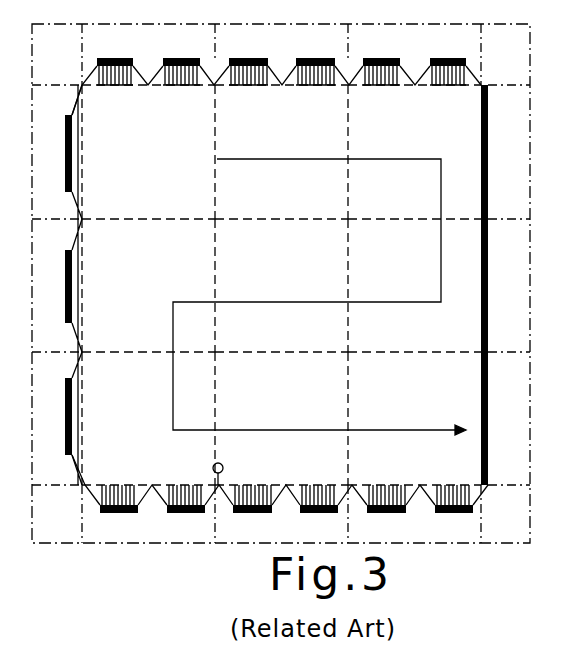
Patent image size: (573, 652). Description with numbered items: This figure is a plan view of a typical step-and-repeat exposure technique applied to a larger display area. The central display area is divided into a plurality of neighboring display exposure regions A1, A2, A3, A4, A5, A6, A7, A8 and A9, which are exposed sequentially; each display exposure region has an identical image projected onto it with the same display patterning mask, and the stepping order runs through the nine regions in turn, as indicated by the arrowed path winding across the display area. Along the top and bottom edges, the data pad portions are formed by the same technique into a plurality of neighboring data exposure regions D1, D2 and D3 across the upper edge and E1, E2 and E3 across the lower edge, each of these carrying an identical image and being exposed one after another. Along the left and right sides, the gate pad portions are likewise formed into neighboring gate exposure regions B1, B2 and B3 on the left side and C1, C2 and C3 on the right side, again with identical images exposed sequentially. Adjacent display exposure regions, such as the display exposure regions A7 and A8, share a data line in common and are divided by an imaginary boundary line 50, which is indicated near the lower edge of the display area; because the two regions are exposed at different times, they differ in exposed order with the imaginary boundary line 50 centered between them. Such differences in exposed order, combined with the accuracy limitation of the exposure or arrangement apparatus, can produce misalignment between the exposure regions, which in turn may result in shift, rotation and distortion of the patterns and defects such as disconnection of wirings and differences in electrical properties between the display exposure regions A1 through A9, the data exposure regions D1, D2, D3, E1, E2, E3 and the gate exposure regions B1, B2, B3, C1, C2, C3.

The data exposure region D1 is at (163, 57).
The data exposure region D2 is at (296, 57).
The data exposure region D3 is at (414, 57).
The data exposure region E1 is at (166, 511).
The data exposure region E2 is at (300, 511).
The data exposure region E3 is at (420, 511).
The gate exposure region B1 is at (58, 152).
The gate exposure region B2 is at (58, 285).
The gate exposure region B3 is at (58, 418).
The gate exposure region C1 is at (502, 152).
The gate exposure region C2 is at (502, 285).
The gate exposure region C3 is at (502, 418).
The display exposure region A1 is at (148, 152).
The display exposure region A2 is at (281, 152).
The display exposure region A3 is at (414, 152).
The display exposure region A4 is at (414, 285).
The display exposure region A5 is at (281, 285).
The display exposure region A6 is at (148, 285).
The display exposure region A7 is at (148, 418).
The display exposure region A8 is at (281, 418).
The display exposure region A9 is at (414, 418).
The imaginary boundary line 50 is at (212, 467).